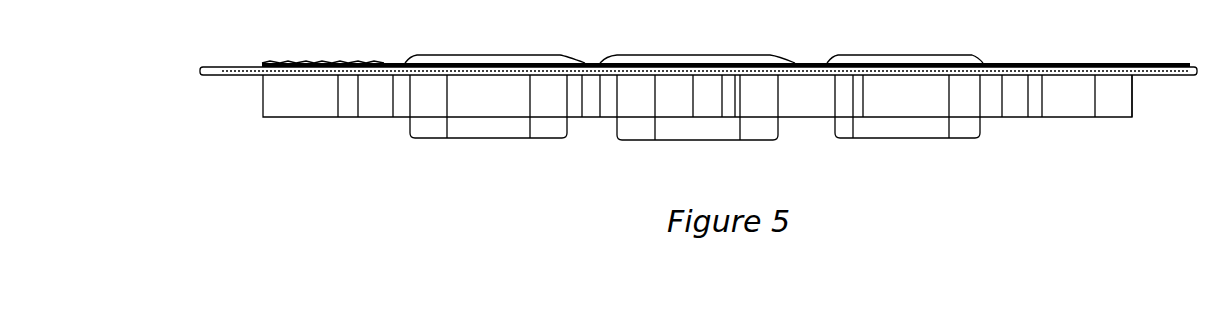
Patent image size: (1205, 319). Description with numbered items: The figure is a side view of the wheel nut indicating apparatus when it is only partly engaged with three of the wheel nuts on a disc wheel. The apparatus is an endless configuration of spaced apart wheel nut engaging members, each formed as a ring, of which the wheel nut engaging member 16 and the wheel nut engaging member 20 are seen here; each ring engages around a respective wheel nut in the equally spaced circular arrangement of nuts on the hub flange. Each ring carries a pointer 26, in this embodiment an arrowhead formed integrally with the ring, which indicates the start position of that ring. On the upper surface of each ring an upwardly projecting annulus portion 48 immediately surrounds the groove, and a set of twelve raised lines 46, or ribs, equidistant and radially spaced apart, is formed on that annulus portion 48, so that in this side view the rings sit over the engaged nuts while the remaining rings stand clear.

The wheel nut engaging member 16 is at (1132, 107).
The wheel nut engaging member 20 is at (262, 103).
The pointer 26 is at (213, 78).
The raised lines 46 is at (273, 63).
The annulus portion 48 is at (317, 63).